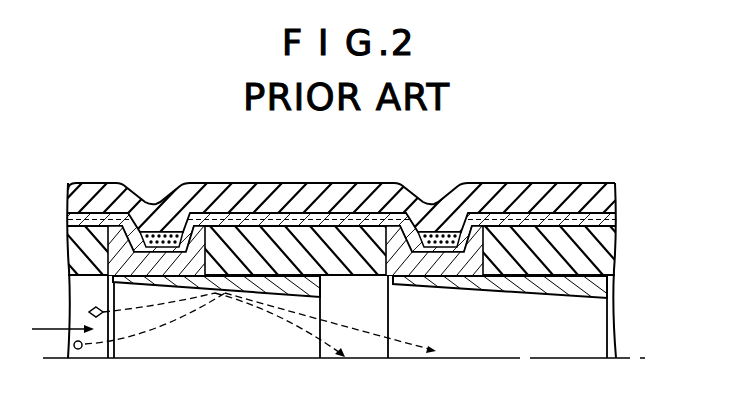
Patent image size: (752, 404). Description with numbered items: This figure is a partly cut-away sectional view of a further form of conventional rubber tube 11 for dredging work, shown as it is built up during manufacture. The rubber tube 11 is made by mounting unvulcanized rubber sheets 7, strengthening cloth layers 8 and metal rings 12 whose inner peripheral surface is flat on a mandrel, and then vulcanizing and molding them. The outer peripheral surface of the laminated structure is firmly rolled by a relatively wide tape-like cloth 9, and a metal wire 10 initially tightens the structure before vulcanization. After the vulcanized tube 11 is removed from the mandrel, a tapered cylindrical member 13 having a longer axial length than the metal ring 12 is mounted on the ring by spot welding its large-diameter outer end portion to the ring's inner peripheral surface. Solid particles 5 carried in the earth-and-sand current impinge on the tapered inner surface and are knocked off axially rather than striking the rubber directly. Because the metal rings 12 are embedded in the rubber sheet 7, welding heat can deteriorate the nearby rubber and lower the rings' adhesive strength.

The solid particles 5 is at (72, 345).
The unvulcanized rubber sheets 7 is at (603, 253).
The strengthening cloth layers 8 is at (74, 218).
The tape-like cloth 9 is at (212, 190).
The metal wire 10 is at (157, 232).
The rubber tube 11 is at (106, 183).
The metal rings 12 is at (117, 258).
The tapered cylindrical member 13 is at (312, 297).